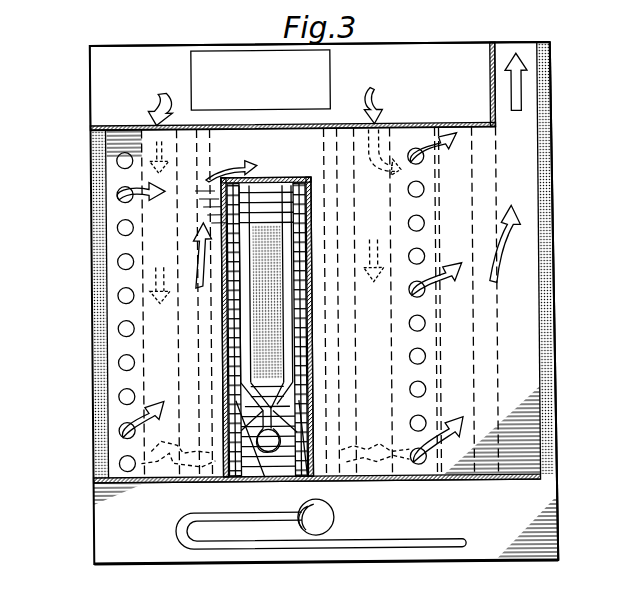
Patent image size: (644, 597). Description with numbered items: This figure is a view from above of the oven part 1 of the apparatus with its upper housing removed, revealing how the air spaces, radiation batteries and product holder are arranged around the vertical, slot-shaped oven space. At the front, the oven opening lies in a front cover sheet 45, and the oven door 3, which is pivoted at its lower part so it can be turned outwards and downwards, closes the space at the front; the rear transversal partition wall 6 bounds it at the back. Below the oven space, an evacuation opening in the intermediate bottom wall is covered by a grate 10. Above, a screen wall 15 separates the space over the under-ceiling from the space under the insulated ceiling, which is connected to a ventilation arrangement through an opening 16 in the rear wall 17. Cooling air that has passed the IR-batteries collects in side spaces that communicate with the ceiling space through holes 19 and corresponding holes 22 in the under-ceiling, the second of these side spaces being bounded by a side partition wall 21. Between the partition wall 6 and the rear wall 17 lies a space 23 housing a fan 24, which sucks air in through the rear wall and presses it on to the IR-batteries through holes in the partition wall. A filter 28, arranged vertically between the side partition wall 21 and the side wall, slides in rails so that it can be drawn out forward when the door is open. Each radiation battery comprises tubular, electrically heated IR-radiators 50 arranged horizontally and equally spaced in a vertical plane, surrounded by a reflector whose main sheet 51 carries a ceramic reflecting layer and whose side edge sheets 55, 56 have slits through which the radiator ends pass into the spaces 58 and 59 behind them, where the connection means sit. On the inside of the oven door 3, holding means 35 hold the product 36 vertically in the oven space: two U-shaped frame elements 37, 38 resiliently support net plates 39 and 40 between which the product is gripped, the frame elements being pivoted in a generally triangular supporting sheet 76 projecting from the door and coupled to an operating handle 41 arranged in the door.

The oven part 1 is at (88, 325).
The oven door 3 is at (560, 497).
The rear transversal partition wall 6 is at (402, 128).
The grate 10 is at (306, 416).
The screen wall 15 is at (284, 177).
The opening 16 is at (540, 44).
The rear wall 17 is at (100, 44).
The holes 19 is at (118, 232).
The side partition wall 21 is at (436, 332).
The holes 22 is at (422, 194).
The space 23 is at (140, 97).
The fan 24 is at (193, 62).
The filter 28 is at (498, 340).
The holding means 35 is at (260, 454).
The product 36 is at (290, 322).
The U-shaped frame element 37 is at (245, 233).
The U-shaped frame element 38 is at (292, 208).
The net plate 39 is at (248, 353).
The net plate 40 is at (292, 366).
The operating handle 41 is at (333, 518).
The front cover sheet 45 is at (464, 481).
The IR-radiators 50 is at (200, 328).
The main sheet 51 is at (377, 250).
The side edge sheet 55 is at (171, 203).
The side edge sheet 56 is at (148, 419).
The space 58 is at (214, 142).
The space 59 is at (215, 462).
The first supporting sheet 76 is at (272, 458).